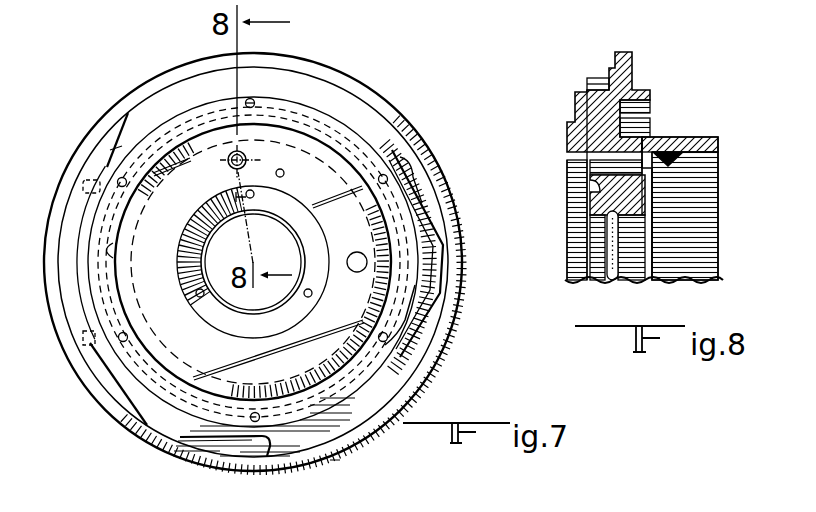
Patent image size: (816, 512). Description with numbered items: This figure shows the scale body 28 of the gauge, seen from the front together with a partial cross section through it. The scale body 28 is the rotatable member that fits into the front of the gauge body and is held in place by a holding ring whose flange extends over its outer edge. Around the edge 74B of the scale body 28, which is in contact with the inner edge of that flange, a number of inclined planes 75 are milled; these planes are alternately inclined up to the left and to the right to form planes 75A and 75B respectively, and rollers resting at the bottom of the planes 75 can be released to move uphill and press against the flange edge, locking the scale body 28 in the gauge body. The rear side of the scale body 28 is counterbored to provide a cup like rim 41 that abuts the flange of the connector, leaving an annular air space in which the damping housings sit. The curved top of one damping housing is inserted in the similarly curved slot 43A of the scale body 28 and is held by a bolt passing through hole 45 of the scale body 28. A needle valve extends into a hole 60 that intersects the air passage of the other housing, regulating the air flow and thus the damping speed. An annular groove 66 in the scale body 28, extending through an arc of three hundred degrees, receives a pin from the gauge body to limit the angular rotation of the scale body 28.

In FIG. 7, the scale body 28 is at (127, 437).
In FIG. 8, the scale body 28 is at (641, 70).
In FIG. 7, the annular groove 66 is at (96, 216).
In FIG. 8, the annular groove 66 is at (641, 97).
In FIG. 7, the curved slot 43A is at (237, 143).
In FIG. 8, the curved slot 43A is at (669, 158).
In FIG. 7, the hole 45 is at (246, 162).
In FIG. 8, the hole 45 is at (590, 192).
In FIG. 7, the edge 74B is at (155, 95).
In FIG. 8, the edge 74B is at (600, 78).
In FIG. 7, the inclined planes 75 is at (420, 208).
In FIG. 8, the inclined planes 75 is at (588, 83).
In FIG. 7, the inclined plane 75A is at (425, 335).
In FIG. 7, the inclined plane 75B is at (243, 440).
In FIG. 7, the hole 60 is at (469, 8).
In FIG. 8, the cup like rim 41 is at (712, 146).